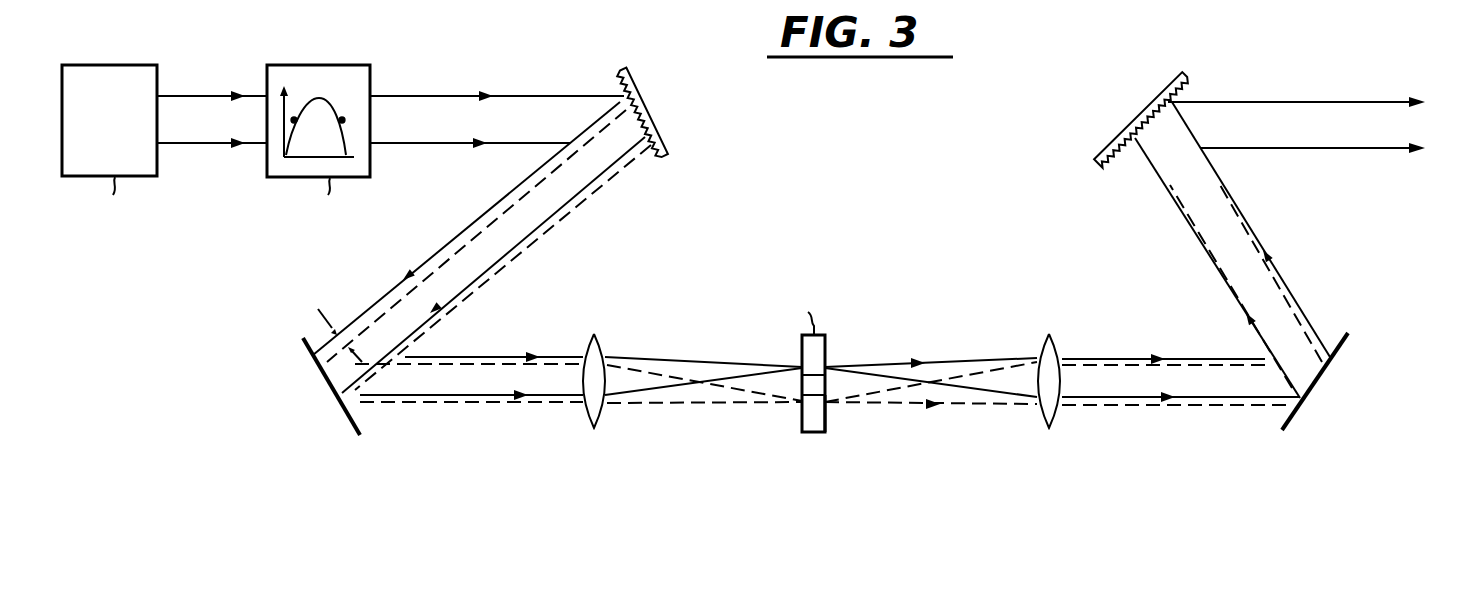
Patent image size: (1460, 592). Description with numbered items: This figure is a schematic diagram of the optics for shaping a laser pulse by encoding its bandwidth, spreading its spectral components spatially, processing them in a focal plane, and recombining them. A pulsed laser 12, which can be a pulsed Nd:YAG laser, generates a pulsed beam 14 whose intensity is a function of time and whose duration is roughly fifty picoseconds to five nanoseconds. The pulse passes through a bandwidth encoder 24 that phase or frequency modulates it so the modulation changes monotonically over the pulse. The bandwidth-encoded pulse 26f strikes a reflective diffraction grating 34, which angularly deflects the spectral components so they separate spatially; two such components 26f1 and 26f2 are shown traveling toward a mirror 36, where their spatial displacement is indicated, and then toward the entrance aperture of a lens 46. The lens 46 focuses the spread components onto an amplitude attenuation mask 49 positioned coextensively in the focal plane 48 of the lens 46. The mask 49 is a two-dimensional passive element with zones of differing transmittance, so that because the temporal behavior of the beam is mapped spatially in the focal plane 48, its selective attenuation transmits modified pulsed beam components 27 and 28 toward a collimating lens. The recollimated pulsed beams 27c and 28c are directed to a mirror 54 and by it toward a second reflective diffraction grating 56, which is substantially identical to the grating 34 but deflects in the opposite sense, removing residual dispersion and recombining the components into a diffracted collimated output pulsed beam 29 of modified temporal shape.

The pulsed laser 12 is at (150, 65).
The pulsed beam 14 is at (170, 98).
The bandwidth encoder 24 is at (360, 65).
The bandwidth-encoded pulse 26f is at (440, 98).
The reflective diffraction grating 34 is at (662, 143).
The mirror 36 is at (330, 373).
The spectral beam component 26f1 is at (523, 355).
The spectral beam component 26f2 is at (350, 400).
The lens 46 is at (593, 428).
The focal plane 48 is at (815, 433).
The amplitude attenuation mask 49 is at (826, 415).
The modified pulsed beam component 27 is at (910, 360).
The modified pulsed beam component 28 is at (957, 407).
The recollimated pulsed beam 27c is at (1116, 360).
The recollimated pulsed beam 28c is at (1160, 407).
The mirror 54 is at (1314, 395).
The reflective diffraction grating 56 is at (1130, 125).
The diffracted collimated output pulsed beam 29 is at (1263, 104).